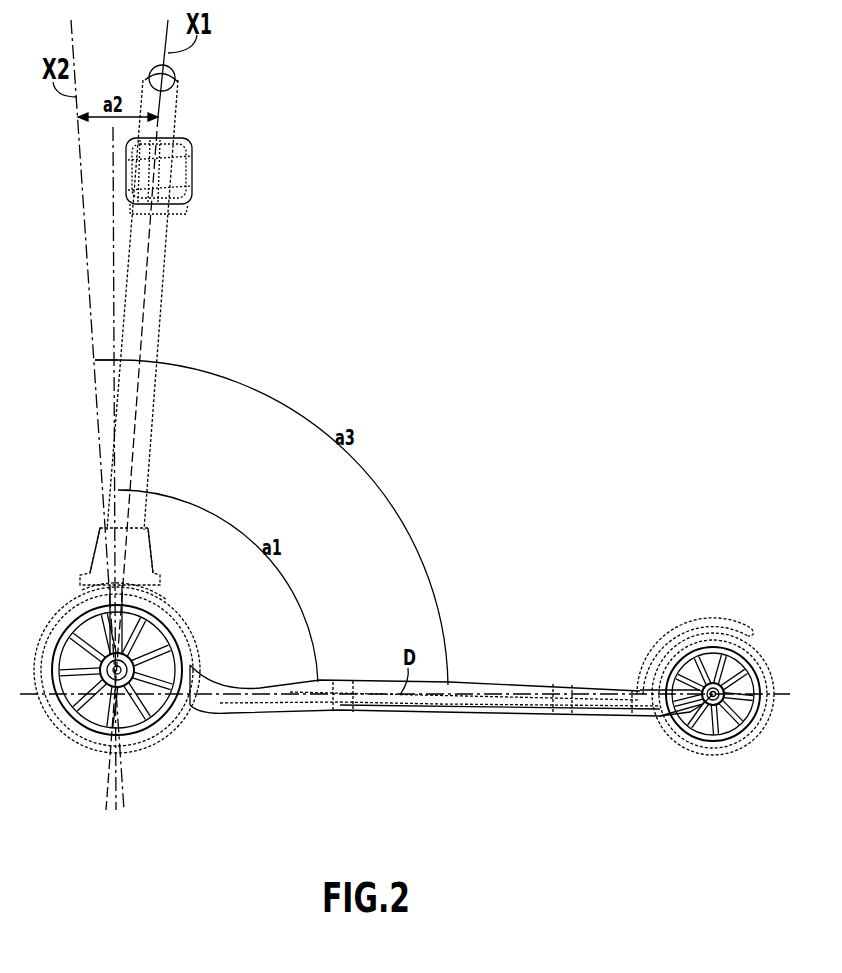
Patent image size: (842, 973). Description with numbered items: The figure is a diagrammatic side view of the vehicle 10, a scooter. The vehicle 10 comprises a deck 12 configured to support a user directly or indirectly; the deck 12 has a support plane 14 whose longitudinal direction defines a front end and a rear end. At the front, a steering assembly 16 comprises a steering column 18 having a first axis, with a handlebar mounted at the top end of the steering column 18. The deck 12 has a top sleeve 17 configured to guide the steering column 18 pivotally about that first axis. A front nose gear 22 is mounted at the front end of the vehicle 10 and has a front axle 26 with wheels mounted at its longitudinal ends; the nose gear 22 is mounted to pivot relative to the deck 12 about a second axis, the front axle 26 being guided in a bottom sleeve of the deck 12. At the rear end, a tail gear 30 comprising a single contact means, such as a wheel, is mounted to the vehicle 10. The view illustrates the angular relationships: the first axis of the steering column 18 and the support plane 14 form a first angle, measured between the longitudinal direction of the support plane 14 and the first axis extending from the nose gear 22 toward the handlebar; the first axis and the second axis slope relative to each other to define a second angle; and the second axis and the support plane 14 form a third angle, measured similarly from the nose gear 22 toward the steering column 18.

The vehicle 10 is at (325, 370).
The deck 12 is at (493, 665).
The support plane 14 is at (507, 702).
The steering assembly 16 is at (205, 161).
The top sleeve 17 is at (133, 580).
The steering column 18 is at (160, 270).
The front nose gear 22 is at (172, 742).
The front axle 26 is at (62, 650).
The tail gear 30 is at (723, 612).